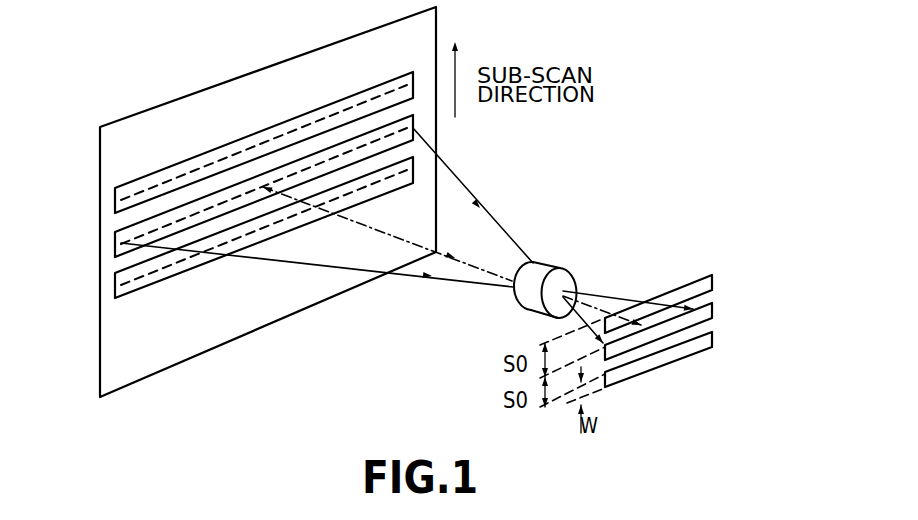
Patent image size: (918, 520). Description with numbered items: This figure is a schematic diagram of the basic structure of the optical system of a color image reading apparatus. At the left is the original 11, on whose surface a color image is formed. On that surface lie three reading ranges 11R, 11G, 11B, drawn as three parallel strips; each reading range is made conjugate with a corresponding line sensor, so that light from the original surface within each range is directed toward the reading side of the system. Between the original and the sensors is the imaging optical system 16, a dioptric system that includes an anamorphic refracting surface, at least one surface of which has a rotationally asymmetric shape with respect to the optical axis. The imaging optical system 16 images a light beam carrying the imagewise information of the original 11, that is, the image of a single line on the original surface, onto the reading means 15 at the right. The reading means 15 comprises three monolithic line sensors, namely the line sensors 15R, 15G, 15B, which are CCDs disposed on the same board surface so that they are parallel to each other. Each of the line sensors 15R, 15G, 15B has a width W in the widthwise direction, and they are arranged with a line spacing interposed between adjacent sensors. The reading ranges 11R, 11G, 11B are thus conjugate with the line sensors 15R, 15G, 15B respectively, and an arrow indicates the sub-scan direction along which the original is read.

The original 11 is at (107, 362).
The reading range 11B is at (115, 206).
The reading range 11G is at (115, 246).
The reading range 11R is at (115, 290).
The imaging optical system 16 is at (552, 267).
The reading means 15 is at (707, 321).
The line sensor 15R is at (713, 278).
The line sensor 15G is at (713, 305).
The line sensor 15B is at (686, 359).